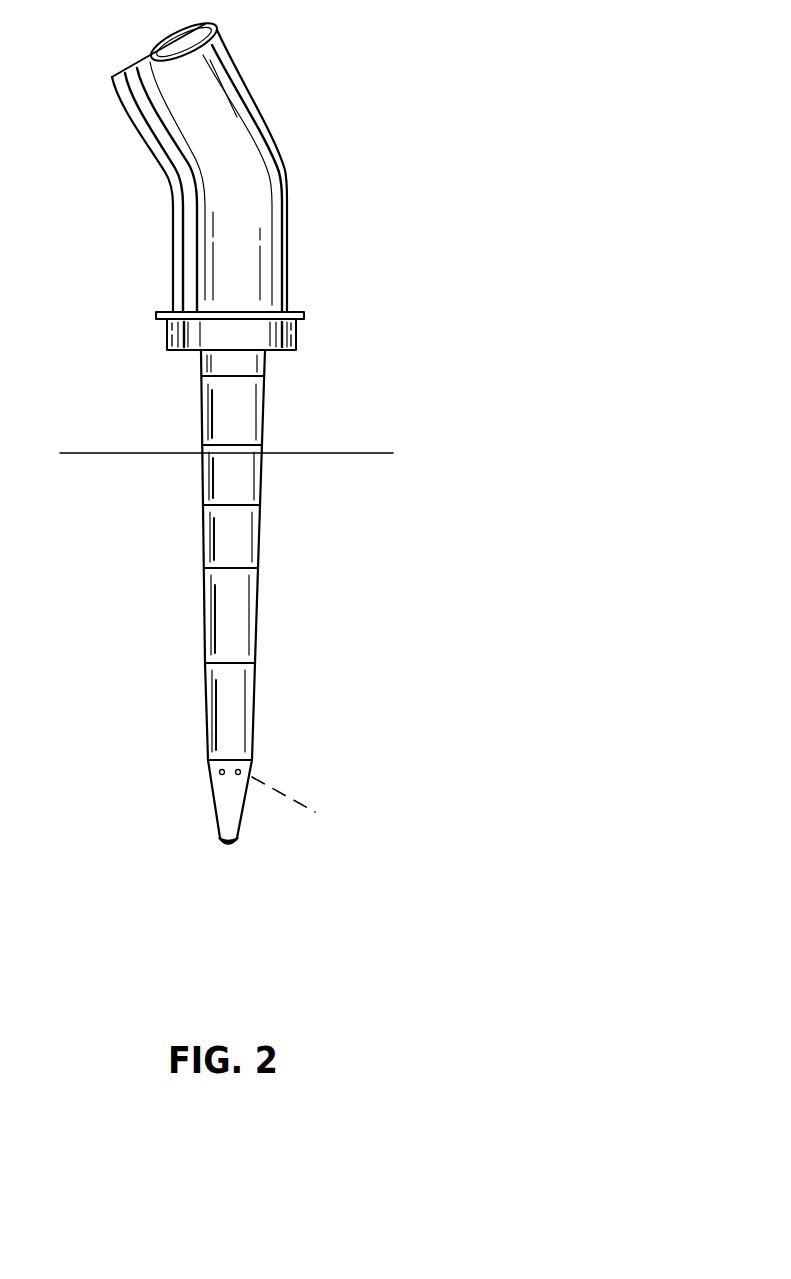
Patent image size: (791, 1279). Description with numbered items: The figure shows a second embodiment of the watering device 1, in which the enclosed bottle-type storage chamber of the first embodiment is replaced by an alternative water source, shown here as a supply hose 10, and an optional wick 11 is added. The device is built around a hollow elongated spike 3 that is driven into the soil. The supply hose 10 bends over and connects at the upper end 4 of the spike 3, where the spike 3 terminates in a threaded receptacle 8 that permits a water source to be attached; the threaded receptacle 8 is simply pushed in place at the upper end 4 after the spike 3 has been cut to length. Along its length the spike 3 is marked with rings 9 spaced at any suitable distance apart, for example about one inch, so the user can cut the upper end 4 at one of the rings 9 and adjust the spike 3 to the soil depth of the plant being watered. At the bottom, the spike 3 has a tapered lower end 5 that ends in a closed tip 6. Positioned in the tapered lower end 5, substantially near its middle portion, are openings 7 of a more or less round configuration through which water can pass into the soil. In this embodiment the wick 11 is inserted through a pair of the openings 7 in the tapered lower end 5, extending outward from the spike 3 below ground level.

The watering device 1 is at (360, 437).
The hollow elongated spike 3 is at (200, 538).
The upper end 4 is at (175, 352).
The tapered lower end 5 is at (255, 768).
The closed tip 6 is at (230, 847).
The openings 7 is at (210, 778).
The threaded receptacle 8 is at (298, 332).
The rings 9 is at (262, 638).
The supply hose 10 is at (290, 207).
The wick 11 is at (315, 805).